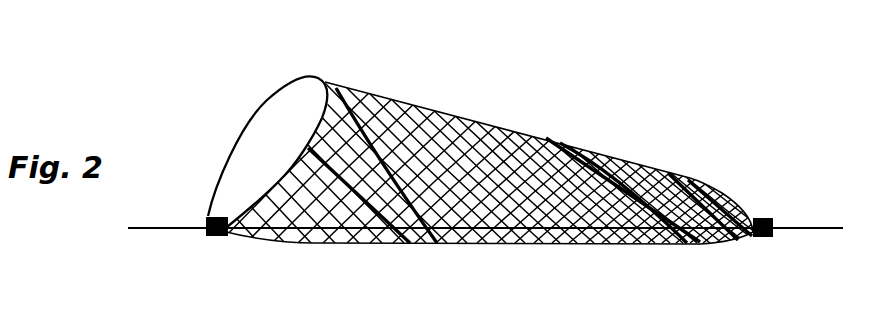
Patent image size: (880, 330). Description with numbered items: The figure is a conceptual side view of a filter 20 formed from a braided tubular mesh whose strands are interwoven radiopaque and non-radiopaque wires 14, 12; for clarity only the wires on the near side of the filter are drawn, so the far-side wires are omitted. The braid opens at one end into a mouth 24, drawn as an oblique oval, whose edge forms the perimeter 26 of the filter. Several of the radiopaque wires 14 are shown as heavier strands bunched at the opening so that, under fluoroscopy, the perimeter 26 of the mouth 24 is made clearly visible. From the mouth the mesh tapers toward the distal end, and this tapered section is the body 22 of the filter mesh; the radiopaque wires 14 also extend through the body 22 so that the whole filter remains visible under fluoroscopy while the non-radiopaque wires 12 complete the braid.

The non-radiopaque wires 12 is at (448, 112).
The radiopaque wires 14 is at (346, 88).
The filter 20 is at (485, 164).
The body 22 is at (702, 255).
The mouth 24 is at (268, 125).
The perimeter 26 is at (283, 178).